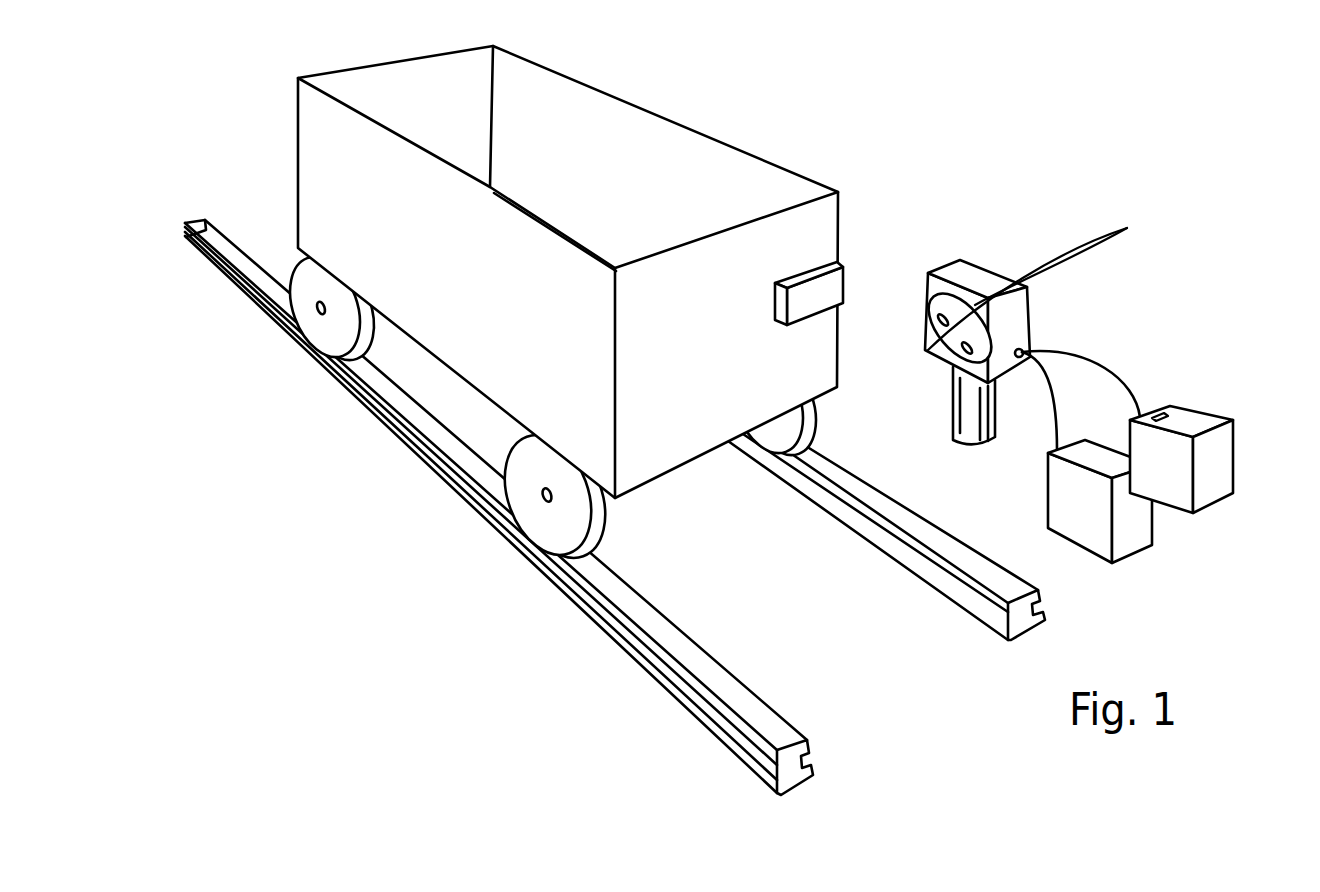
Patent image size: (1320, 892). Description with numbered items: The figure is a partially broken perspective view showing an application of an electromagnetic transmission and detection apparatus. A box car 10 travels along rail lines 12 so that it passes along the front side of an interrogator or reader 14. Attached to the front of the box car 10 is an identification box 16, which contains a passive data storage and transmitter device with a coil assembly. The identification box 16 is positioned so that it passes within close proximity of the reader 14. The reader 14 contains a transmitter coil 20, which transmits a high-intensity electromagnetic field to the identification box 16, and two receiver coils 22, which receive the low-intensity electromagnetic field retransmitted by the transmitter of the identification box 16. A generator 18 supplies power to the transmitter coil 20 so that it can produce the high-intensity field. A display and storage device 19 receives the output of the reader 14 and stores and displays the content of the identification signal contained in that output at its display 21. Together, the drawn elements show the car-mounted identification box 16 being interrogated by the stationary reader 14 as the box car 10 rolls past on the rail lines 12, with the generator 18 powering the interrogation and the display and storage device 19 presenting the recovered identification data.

The box car 10 is at (530, 110).
The rail lines 12 is at (832, 503).
The reader 14 is at (970, 280).
The identification box 16 is at (825, 290).
The generator 18 is at (1135, 517).
The display and storage device 19 is at (1227, 452).
The transmitter coil 20 is at (928, 350).
The display 21 is at (1173, 410).
The receiver coils 22 is at (1046, 276).